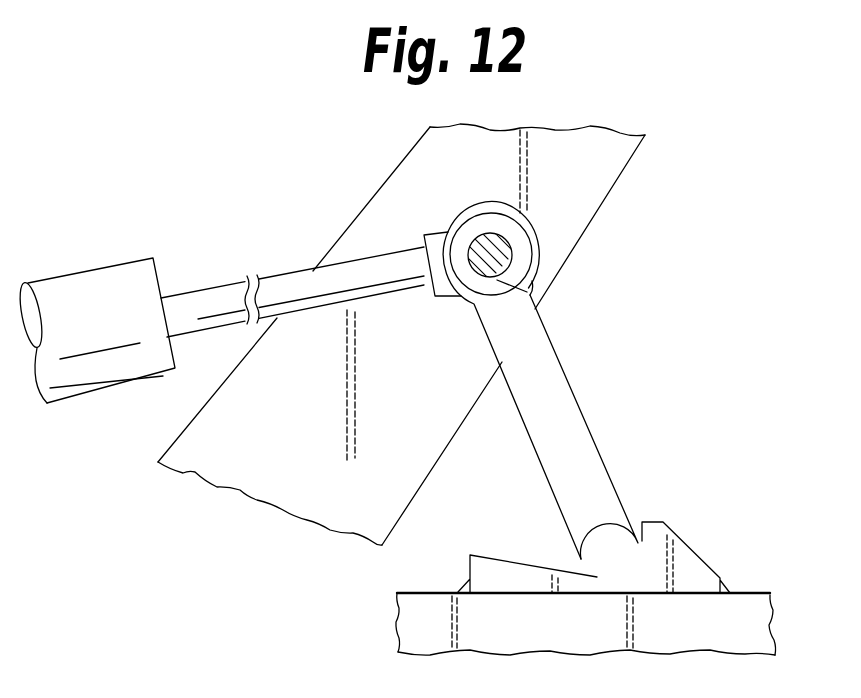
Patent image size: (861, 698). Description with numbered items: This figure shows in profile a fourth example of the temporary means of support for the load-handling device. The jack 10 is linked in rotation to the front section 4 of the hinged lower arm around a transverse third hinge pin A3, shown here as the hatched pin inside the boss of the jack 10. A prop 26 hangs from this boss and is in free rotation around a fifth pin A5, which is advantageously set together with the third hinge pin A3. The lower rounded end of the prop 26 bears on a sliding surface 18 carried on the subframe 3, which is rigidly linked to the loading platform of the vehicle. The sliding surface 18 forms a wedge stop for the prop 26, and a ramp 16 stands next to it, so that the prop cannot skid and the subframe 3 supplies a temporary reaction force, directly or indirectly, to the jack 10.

The front section 4 is at (593, 175).
The jack 10 is at (514, 221).
The third hinge pin A3 is at (493, 255).
The fifth pin A5 is at (528, 292).
The prop 26 is at (553, 392).
The sliding surface 18 is at (527, 563).
The ramp 16 is at (670, 550).
The subframe 3 is at (748, 623).